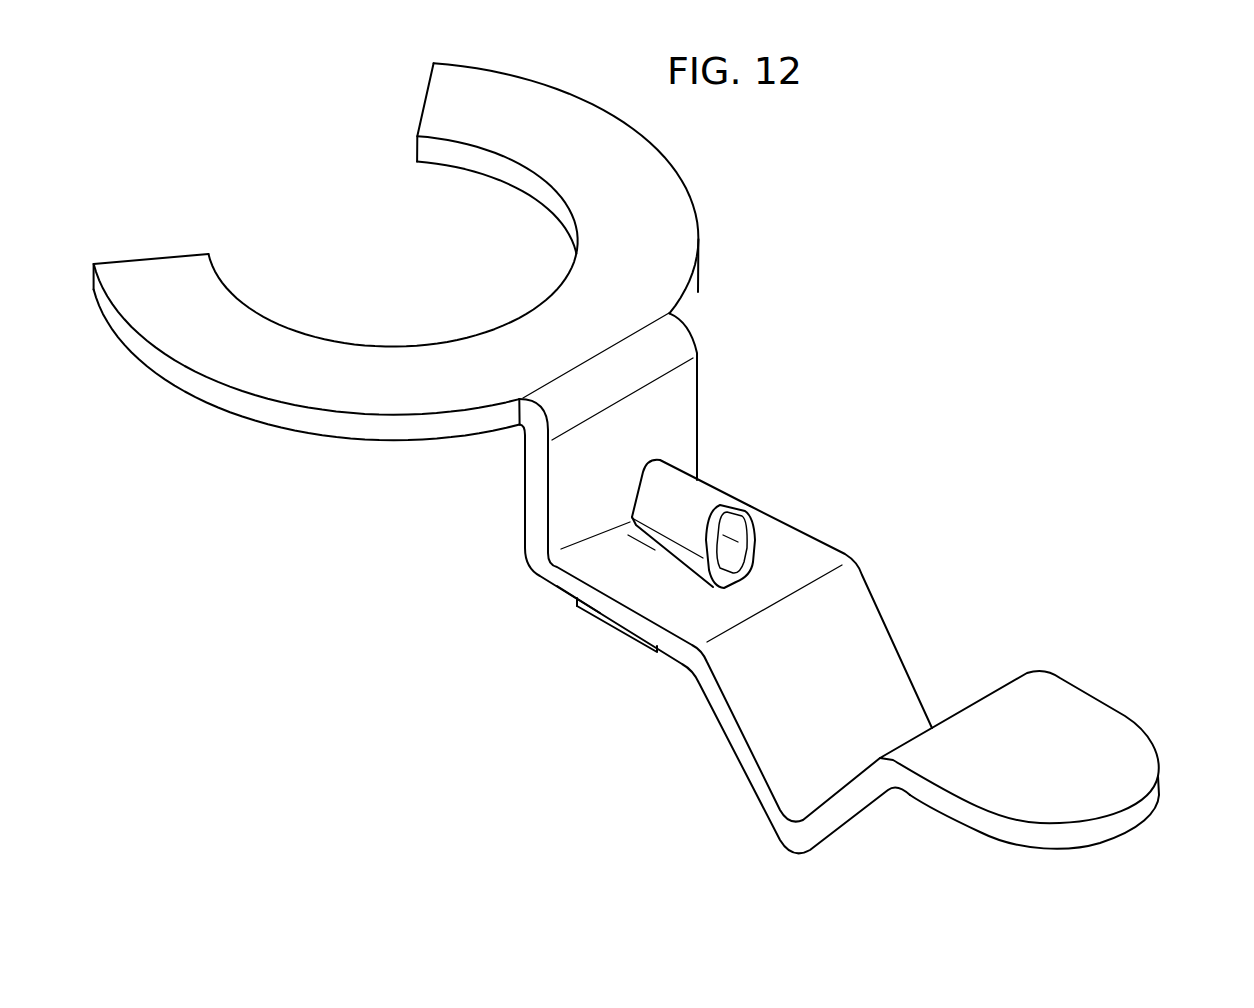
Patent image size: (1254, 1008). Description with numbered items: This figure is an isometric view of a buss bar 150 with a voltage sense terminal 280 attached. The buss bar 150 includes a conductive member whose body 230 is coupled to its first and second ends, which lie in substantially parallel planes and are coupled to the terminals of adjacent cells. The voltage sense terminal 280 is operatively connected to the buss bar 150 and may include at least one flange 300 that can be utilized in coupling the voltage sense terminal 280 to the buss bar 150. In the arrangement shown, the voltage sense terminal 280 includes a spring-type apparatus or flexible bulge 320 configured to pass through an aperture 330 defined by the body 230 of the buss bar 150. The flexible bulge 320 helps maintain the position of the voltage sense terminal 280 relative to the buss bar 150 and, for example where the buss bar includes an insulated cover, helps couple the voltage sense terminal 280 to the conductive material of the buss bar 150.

The buss bar 150 is at (878, 405).
The body 230 is at (797, 547).
The voltage sense terminal 280 is at (625, 638).
The flange 300 is at (580, 607).
The flexible bulge 320 is at (700, 490).
The aperture 330 is at (632, 517).